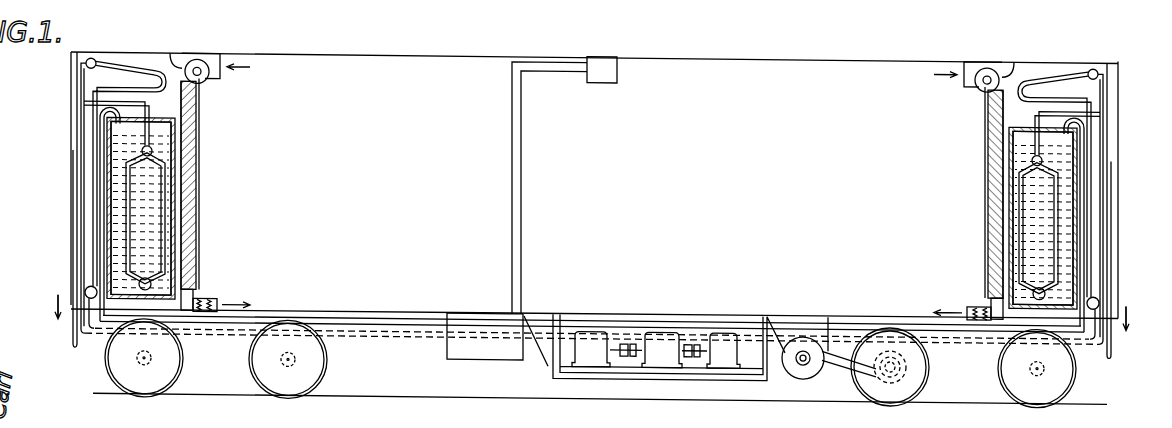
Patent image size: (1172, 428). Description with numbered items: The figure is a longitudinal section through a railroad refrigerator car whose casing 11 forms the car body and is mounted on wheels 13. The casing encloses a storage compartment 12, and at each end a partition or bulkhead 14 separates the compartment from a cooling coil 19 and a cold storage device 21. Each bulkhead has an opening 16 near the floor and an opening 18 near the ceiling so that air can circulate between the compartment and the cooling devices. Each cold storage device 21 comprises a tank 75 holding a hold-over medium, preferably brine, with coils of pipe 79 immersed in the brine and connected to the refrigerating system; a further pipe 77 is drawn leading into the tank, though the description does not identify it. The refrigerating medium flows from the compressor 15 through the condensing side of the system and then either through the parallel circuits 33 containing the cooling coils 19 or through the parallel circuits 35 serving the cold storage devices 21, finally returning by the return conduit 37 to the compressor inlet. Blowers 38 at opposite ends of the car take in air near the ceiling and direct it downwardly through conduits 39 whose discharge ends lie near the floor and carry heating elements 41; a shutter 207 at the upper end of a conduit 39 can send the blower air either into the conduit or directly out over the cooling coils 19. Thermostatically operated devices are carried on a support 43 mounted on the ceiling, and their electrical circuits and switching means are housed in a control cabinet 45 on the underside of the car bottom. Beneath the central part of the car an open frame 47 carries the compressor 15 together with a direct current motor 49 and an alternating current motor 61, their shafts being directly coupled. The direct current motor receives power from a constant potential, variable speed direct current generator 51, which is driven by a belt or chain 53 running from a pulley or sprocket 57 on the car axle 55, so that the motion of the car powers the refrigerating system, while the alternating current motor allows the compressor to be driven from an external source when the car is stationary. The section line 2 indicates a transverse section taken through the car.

The section line 2 is at (55, 303).
The casing 11 is at (72, 145).
The compartment 12 is at (768, 54).
The wheels 13 is at (312, 357).
The bulkheads 14 is at (197, 233).
The compressor 15 is at (591, 349).
The openings 16 is at (187, 306).
The openings 18 is at (170, 54).
The cooling coils 19 is at (130, 68).
The cold storage devices 21 is at (133, 217).
The parallel circuits 33 is at (90, 181).
The parallel circuits 35 is at (100, 130).
The return conduit 37 is at (75, 275).
The blowers 38 is at (213, 53).
The conduits 39 is at (182, 213).
The heating elements 41 is at (210, 297).
The support 43 is at (607, 53).
The control cabinet 45 is at (472, 352).
The frame 47 is at (548, 361).
The direct current motor 49 is at (662, 349).
The direct current generator 51 is at (796, 370).
The belt or chain 53 is at (855, 367).
The car axle 55 is at (860, 358).
The pulley or sprocket 57 is at (877, 371).
The alternating current motor 61 is at (723, 350).
The tanks 75 is at (173, 262).
The supply pipe 77 is at (198, 140).
The coils of pipe 79 is at (167, 182).
The shutter 207 is at (200, 97).